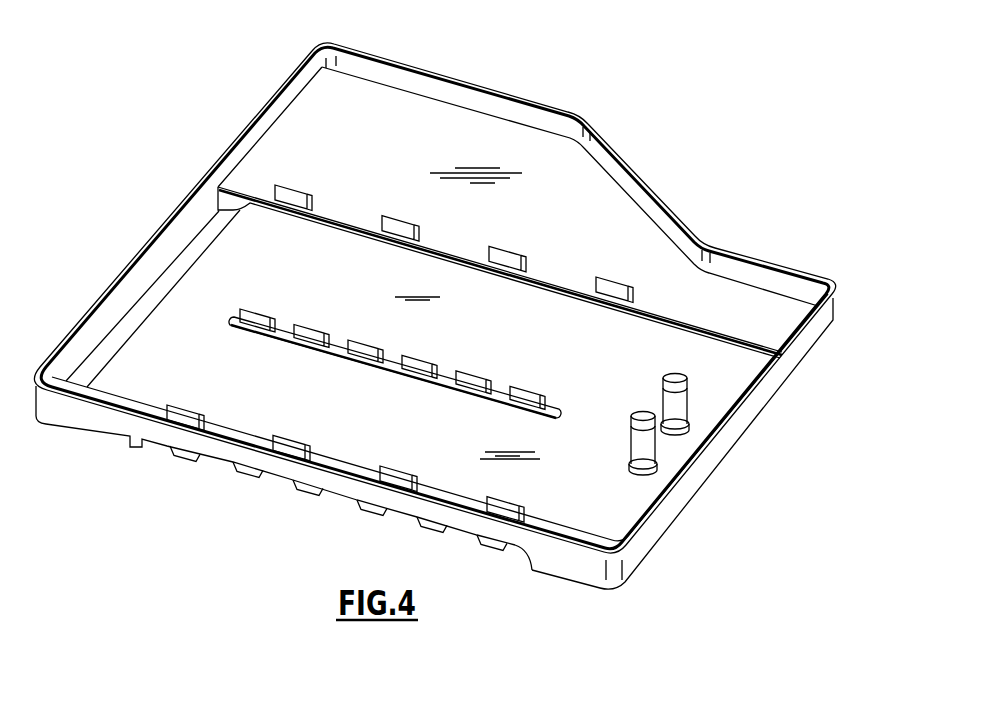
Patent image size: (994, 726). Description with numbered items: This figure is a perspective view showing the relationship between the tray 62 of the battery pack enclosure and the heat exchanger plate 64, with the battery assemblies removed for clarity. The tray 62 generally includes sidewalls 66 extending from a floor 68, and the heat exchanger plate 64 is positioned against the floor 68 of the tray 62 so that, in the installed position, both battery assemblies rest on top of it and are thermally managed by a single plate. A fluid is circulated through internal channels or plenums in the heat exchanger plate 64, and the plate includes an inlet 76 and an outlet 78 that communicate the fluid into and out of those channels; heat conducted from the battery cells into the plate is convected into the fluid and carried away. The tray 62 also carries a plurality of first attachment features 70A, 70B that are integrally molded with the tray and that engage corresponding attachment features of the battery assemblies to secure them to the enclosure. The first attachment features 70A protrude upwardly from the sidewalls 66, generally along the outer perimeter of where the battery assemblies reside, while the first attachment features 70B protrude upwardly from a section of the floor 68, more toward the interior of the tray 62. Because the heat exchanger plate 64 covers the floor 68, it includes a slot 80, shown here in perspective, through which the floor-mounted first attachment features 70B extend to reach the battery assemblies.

The tray 62 is at (276, 465).
The heat exchanger plate 64 is at (617, 518).
The sidewalls 66 is at (591, 562).
The floor 68 is at (285, 328).
The first attachment features 70A is at (300, 192).
The first attachment features 70B is at (255, 323).
The inlet 76 is at (676, 410).
The outlet 78 is at (642, 447).
The slot 80 is at (340, 356).